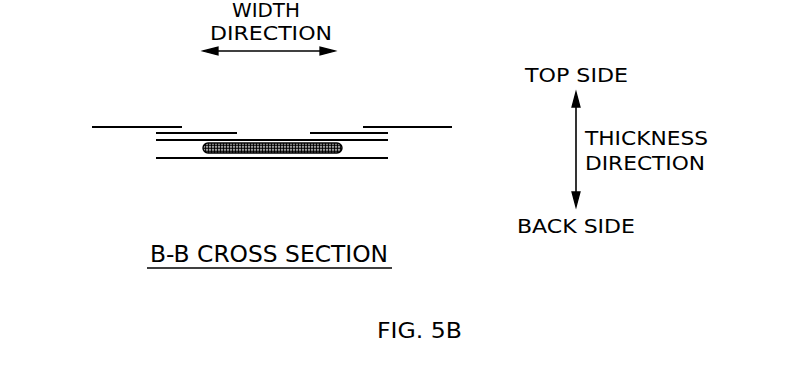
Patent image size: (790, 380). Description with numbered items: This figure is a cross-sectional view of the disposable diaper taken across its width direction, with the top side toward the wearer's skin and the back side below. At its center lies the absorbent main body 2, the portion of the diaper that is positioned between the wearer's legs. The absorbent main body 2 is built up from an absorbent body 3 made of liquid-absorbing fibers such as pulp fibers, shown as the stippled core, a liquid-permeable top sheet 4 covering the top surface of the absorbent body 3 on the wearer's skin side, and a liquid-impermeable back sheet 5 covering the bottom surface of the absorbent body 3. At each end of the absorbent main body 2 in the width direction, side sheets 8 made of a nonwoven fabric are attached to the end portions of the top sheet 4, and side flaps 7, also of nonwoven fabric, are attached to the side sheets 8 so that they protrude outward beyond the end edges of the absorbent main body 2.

The absorbent main body 2 is at (302, 141).
The absorbent body 3 is at (277, 153).
The top sheet 4 is at (362, 140).
The back sheet 5 is at (333, 158).
The side flap 7 is at (130, 127).
The side sheet 8 is at (201, 133).